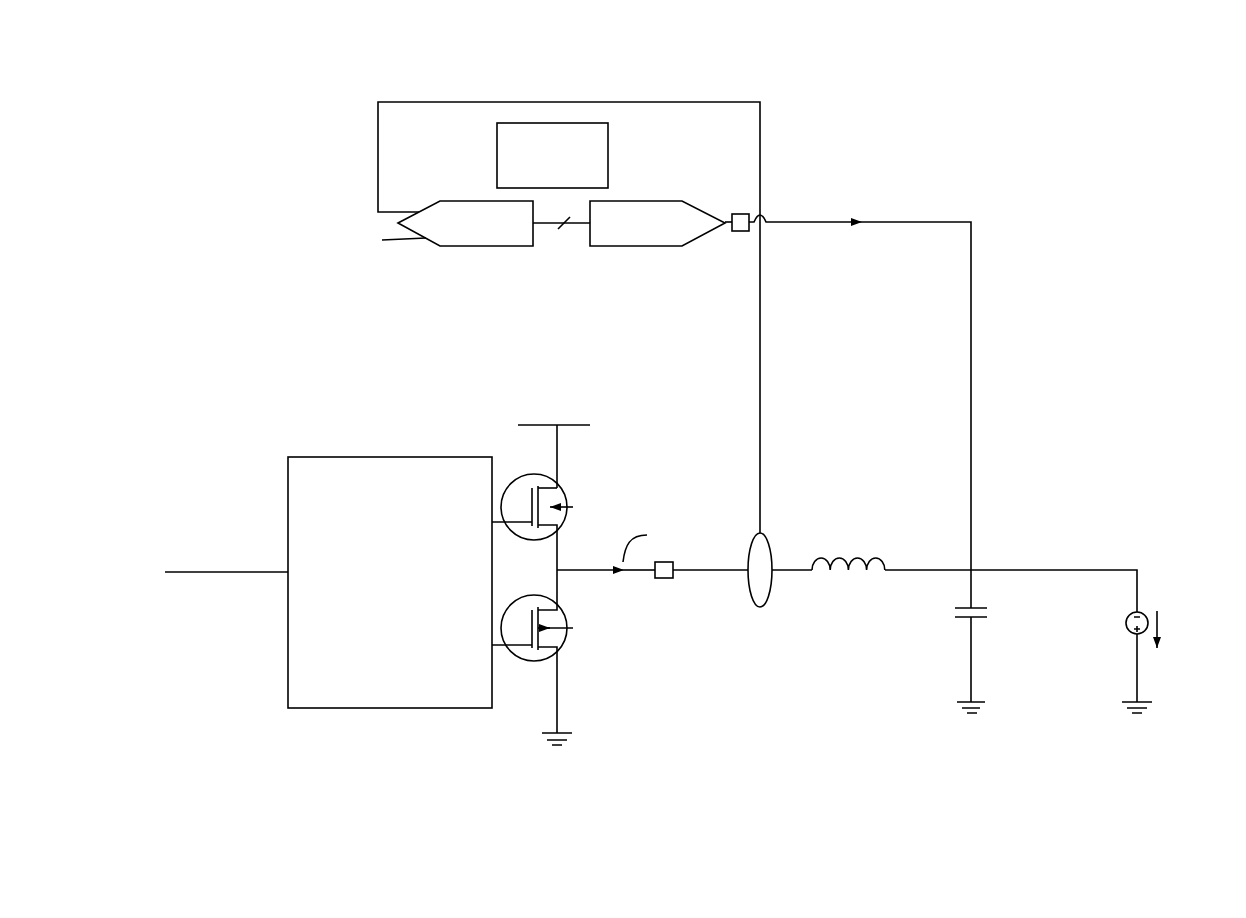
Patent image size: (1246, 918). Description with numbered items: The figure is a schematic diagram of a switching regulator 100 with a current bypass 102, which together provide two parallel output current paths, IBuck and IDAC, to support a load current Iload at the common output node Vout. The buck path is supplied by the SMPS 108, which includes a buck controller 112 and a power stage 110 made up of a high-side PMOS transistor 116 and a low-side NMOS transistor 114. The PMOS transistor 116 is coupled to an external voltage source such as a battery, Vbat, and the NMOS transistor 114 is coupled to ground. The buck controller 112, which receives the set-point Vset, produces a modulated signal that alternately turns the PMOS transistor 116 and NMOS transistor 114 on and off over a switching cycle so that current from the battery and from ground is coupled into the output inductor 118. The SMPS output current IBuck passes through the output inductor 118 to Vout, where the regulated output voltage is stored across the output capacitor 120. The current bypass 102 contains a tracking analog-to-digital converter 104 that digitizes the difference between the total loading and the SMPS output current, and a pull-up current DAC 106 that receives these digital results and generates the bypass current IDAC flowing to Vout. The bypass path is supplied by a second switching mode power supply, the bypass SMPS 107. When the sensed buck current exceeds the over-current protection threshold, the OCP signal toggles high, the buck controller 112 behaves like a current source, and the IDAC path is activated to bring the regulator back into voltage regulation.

The switching regulator 100 is at (212, 70).
The current bypass 102 is at (332, 145).
The tracking analog-to-digital converter (ADC) 104 is at (488, 246).
The pull-up current DAC (IDAC) 106 is at (635, 246).
The bypass SMPS 107 is at (623, 142).
The SMPS 108 is at (247, 485).
The power stage 110 is at (495, 425).
The buck controller 112 is at (362, 708).
The NMOS transistor 114 is at (573, 628).
The PMOS transistor 116 is at (573, 507).
The output inductor 118 is at (842, 555).
The output capacitor 120 is at (980, 618).